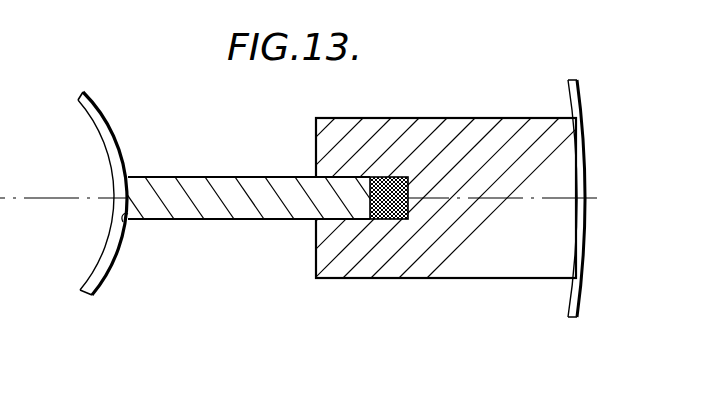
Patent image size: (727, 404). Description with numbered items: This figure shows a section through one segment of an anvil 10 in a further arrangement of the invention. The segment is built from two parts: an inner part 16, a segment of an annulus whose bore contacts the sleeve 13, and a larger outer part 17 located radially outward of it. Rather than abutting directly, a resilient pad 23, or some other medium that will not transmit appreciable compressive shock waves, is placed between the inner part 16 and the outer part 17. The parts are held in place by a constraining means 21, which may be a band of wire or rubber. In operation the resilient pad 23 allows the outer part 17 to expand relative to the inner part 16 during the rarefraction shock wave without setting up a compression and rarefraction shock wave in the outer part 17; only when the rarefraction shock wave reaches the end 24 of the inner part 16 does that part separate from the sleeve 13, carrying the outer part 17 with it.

The anvil 10 is at (196, 272).
The sleeve 13 is at (104, 133).
The inner part of anvil 16 is at (277, 220).
The outer part of anvil 17 is at (475, 133).
The constraining means 21 is at (570, 307).
The resilient pad 23 is at (388, 177).
The end of member 24 is at (124, 221).